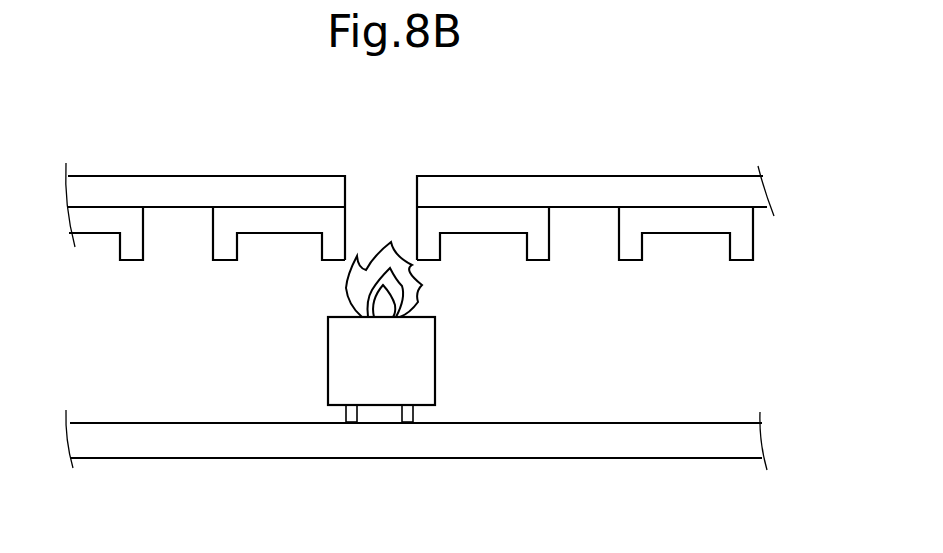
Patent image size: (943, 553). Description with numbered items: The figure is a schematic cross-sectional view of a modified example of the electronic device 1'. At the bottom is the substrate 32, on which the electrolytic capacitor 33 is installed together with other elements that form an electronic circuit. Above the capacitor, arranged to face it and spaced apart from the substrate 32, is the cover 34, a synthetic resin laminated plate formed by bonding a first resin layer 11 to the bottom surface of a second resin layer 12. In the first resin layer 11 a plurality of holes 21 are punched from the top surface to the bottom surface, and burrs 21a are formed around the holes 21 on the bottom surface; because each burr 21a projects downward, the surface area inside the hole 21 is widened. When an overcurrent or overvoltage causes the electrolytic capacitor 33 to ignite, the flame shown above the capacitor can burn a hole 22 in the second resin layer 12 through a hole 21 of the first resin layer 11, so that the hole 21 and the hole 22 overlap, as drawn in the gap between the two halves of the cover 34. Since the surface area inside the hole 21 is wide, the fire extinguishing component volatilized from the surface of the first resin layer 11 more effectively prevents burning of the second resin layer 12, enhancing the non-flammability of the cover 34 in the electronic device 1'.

The electronic device 1' is at (359, 227).
The first resin layer 11 is at (702, 229).
The second resin layer 12 is at (698, 183).
The hole 21 is at (380, 233).
The burr 21a is at (132, 262).
The hole 22 is at (362, 187).
The substrate 32 is at (668, 423).
The electrolytic capacitor 33 is at (435, 367).
The cover 34 is at (646, 170).